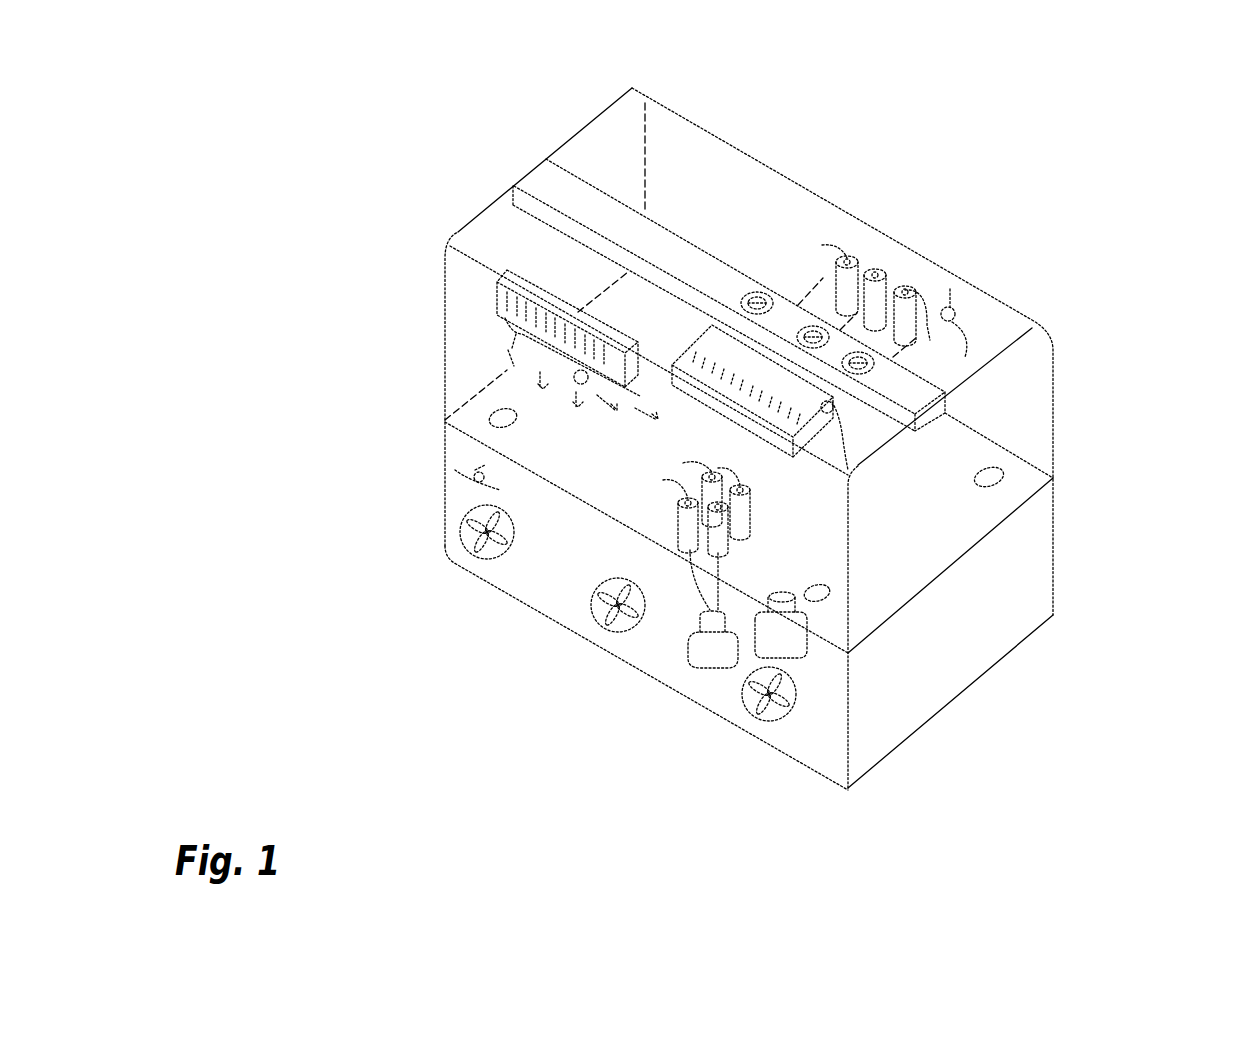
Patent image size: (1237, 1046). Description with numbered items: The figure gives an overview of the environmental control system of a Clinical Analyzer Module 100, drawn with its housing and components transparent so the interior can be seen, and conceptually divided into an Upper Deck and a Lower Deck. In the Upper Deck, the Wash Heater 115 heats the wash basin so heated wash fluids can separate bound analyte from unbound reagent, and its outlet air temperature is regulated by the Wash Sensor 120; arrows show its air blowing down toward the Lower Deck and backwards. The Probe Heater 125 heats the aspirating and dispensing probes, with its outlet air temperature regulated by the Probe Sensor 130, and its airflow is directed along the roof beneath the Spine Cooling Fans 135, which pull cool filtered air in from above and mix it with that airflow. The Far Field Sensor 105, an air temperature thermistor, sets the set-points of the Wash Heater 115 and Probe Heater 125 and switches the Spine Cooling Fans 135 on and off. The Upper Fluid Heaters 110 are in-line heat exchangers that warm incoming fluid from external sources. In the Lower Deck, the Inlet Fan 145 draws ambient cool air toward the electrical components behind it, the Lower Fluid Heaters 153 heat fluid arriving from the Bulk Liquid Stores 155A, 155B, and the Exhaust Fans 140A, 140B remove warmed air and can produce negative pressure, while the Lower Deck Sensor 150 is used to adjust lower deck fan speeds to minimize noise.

The Clinical Analyzer Module 100 is at (1150, 88).
The Far Field Sensor 105 is at (957, 314).
The Upper Fluid Heaters 110 is at (856, 257).
The Wash Heater 115 is at (512, 275).
The Wash Sensor 120 is at (571, 366).
The Probe Heater 125 is at (771, 429).
The Probe Sensor 130 is at (845, 437).
The Spine Cooling Fans 135 is at (654, 241).
The Exhaust Fan 140A is at (481, 549).
The Exhaust Fan 140B is at (753, 705).
The Inlet Fan 145 is at (608, 622).
The Lower Deck Sensor 150 is at (475, 481).
The Lower Fluid Heaters 153 is at (750, 533).
The Bulk Liquid Store 155A is at (709, 655).
The Bulk Liquid Store 155B is at (780, 637).